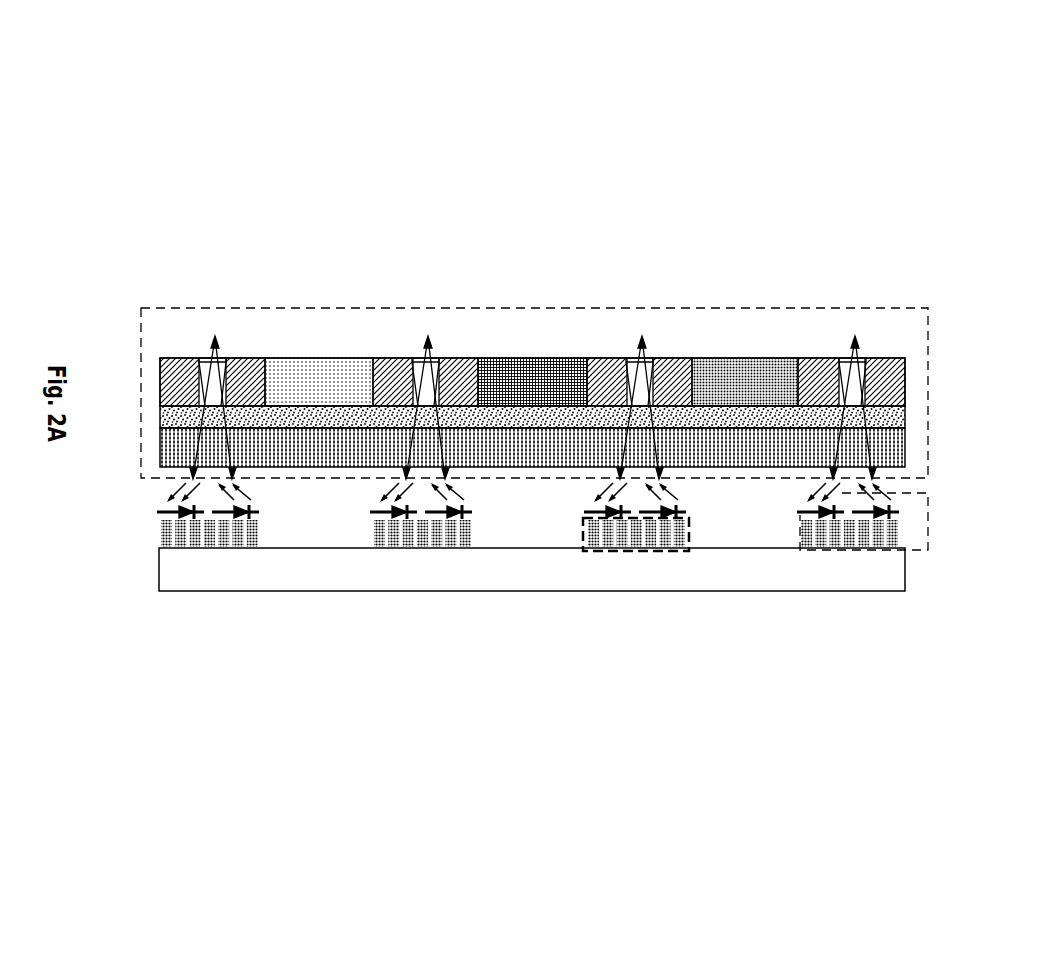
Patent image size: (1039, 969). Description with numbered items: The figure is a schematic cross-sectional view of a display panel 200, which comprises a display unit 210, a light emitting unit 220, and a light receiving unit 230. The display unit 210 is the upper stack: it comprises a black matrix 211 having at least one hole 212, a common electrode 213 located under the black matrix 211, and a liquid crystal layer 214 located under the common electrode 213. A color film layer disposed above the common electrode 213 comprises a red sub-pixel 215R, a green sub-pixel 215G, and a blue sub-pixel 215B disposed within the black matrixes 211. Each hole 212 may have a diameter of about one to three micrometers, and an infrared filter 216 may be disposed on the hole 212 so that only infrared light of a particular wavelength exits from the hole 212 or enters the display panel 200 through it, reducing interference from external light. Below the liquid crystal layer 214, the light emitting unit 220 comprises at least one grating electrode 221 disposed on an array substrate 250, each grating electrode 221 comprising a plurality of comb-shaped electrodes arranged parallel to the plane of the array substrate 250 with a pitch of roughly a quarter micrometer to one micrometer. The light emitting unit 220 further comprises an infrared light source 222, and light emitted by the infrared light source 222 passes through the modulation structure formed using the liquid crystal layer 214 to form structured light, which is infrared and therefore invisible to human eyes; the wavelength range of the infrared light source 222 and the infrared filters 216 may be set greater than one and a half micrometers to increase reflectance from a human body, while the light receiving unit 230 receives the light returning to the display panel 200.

The display panel 200 is at (968, 245).
The display unit 210 is at (228, 307).
The black matrix 211 is at (890, 358).
The hole 212 is at (656, 358).
The common electrode 213 is at (905, 417).
The liquid crystal layer 214 is at (905, 448).
The red sub-pixel 215R is at (307, 358).
The green sub-pixel 215G is at (522, 358).
The blue sub-pixel 215B is at (742, 358).
The infrared filter 216 is at (438, 357).
The light emitting unit 220 is at (928, 531).
The grating electrode 221 is at (689, 527).
The infrared light source 222 is at (690, 513).
The light receiving unit 230 is at (597, 503).
The array substrate 250 is at (905, 580).